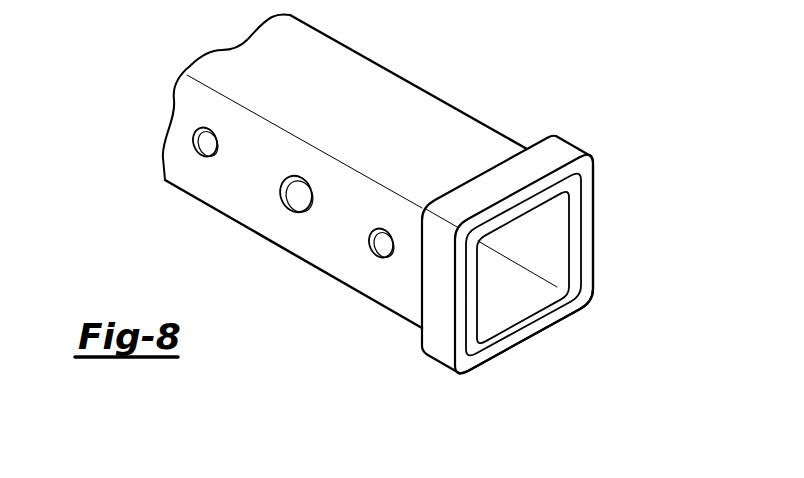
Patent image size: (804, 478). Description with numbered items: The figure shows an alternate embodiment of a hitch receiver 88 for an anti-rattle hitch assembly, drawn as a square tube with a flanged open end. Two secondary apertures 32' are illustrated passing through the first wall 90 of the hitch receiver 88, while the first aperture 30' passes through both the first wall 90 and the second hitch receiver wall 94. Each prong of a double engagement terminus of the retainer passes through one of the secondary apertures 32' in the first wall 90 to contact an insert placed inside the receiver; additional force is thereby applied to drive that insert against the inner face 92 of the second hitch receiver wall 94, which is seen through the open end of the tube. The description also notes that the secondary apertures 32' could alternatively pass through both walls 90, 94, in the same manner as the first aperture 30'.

The hitch receiver 88 is at (478, 91).
The first wall 90 is at (331, 263).
The inner face 92 is at (554, 238).
The second hitch receiver wall 94 is at (593, 192).
The pin aperture 30' is at (252, 217).
The secondary apertures 32' is at (247, 240).